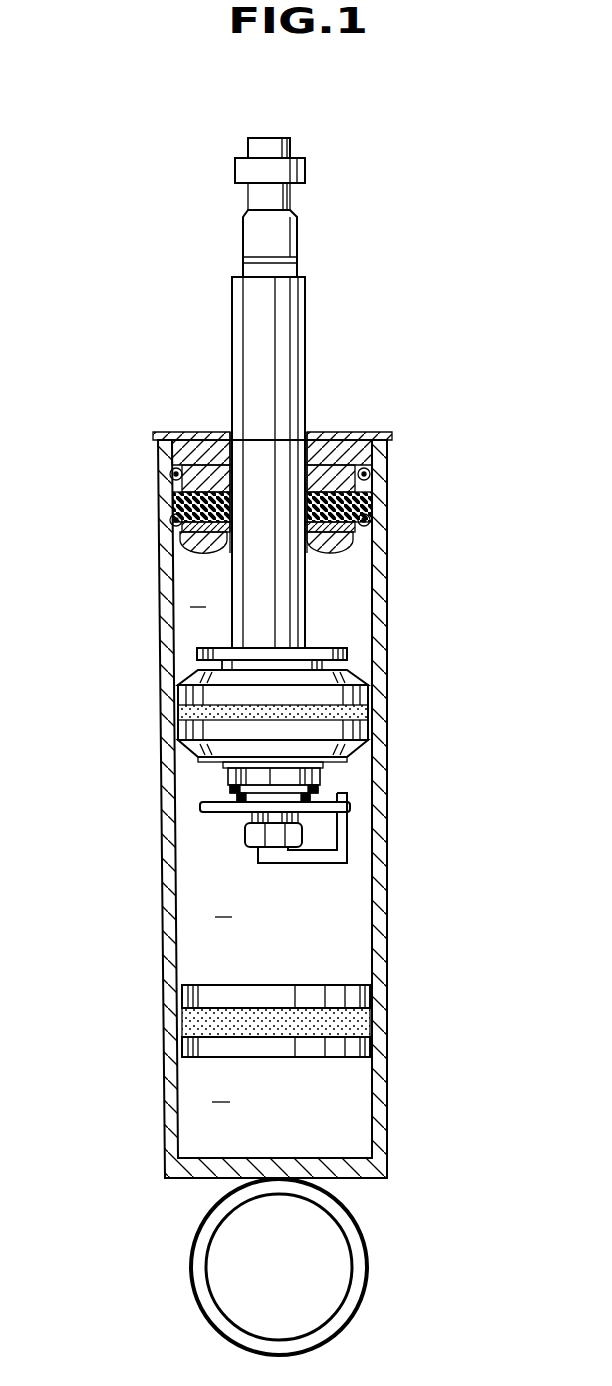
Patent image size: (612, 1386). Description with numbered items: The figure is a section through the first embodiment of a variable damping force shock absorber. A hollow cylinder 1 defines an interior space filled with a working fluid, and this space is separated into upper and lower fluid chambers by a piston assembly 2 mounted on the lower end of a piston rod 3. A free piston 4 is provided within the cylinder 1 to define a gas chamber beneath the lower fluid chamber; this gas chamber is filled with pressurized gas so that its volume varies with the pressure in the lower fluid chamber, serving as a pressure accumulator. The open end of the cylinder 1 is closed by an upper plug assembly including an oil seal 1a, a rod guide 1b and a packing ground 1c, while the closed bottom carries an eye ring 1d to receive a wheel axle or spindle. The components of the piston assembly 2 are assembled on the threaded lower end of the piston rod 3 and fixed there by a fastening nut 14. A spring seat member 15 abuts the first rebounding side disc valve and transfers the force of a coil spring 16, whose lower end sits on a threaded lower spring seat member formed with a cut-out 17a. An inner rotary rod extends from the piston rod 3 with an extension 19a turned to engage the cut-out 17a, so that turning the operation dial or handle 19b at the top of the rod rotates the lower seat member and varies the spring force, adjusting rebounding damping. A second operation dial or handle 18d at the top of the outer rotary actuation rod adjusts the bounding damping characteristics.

The hollow cylinder 1 is at (160, 878).
The oil seal 1a is at (370, 510).
The rod guide 1b is at (370, 490).
The packing ground 1c is at (390, 435).
The eye ring 1d is at (192, 1275).
The piston assembly 2 is at (365, 688).
The piston rod 3 is at (228, 312).
The free piston 4 is at (183, 1000).
The fastening nut 14 is at (245, 837).
The spring seat member 15 is at (235, 780).
The coil spring 16 is at (320, 797).
The cut-out 17a is at (200, 807).
The operation dial or handle 18d is at (237, 167).
The extension 19a is at (340, 842).
The operation dial or handle 19b is at (243, 137).